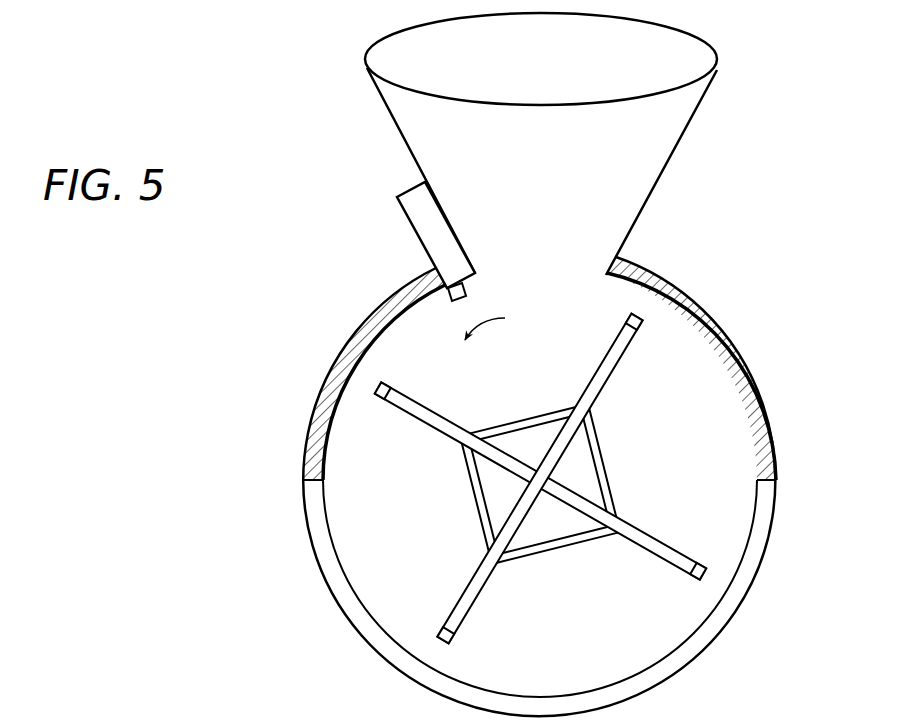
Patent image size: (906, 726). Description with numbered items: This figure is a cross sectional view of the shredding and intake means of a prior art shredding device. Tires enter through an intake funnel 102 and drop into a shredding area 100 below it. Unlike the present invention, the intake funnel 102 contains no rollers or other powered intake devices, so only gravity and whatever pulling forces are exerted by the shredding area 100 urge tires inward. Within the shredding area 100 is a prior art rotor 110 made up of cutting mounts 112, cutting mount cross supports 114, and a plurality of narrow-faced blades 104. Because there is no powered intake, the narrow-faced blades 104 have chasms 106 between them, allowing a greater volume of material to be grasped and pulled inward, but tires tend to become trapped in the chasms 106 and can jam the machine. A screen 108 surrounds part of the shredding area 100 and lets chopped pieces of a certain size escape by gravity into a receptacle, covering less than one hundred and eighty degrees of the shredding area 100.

The shredding area 100 is at (451, 369).
The intake funnel 102 is at (670, 157).
The narrow-faced blades 104 is at (633, 313).
The chasms 106 is at (521, 374).
The screen 108 is at (675, 658).
The rotor 110 is at (642, 460).
The cutting mounts 112 is at (405, 395).
The cutting mount cross supports 114 is at (547, 405).